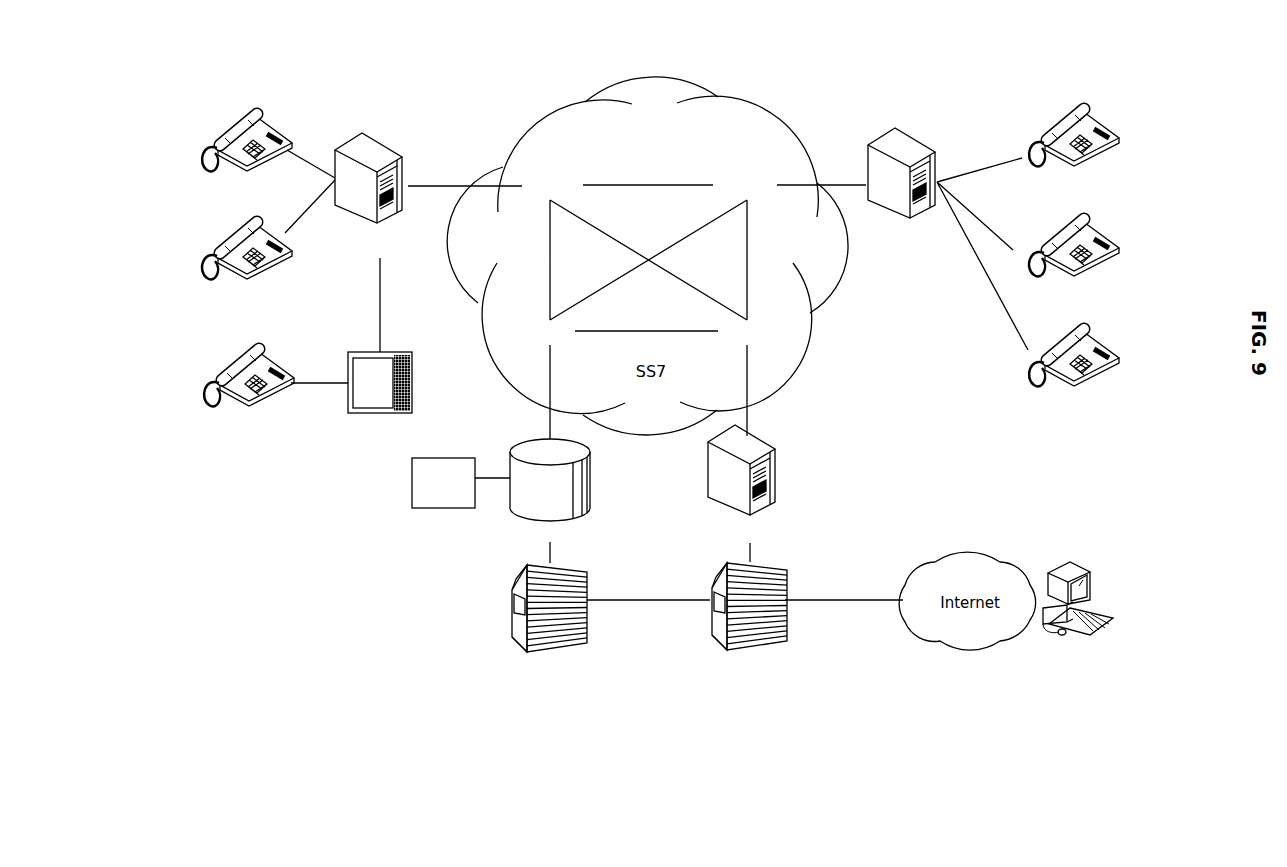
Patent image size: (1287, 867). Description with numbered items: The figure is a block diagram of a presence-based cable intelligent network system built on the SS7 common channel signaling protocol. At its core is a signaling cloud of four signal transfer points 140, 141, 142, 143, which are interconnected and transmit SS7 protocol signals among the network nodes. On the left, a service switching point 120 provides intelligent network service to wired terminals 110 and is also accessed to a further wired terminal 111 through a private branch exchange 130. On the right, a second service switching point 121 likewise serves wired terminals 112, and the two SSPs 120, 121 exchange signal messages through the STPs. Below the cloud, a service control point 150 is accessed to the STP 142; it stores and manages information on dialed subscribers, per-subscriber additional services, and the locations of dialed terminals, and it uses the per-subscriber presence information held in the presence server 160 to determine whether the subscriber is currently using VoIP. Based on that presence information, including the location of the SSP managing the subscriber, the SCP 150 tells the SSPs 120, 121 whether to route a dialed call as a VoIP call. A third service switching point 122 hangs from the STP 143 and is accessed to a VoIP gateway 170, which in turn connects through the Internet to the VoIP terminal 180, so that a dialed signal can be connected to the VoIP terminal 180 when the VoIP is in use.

The wired terminal 110 is at (279, 124).
The wired terminal 111 is at (257, 350).
The wired terminal 112 is at (1078, 112).
The service switching point 120 is at (371, 144).
The service switching point 121 is at (900, 140).
The service switching point 122 is at (776, 478).
The private branch exchange 130 is at (395, 351).
The signal transfer point 140 is at (556, 164).
The signal transfer point 141 is at (745, 164).
The signal transfer point 142 is at (537, 313).
The signal transfer point 143 is at (762, 310).
The service control point 150 is at (591, 481).
The presence server 160 is at (588, 585).
The VoIP gateway 170 is at (786, 578).
The VoIP terminal 180 is at (1064, 567).